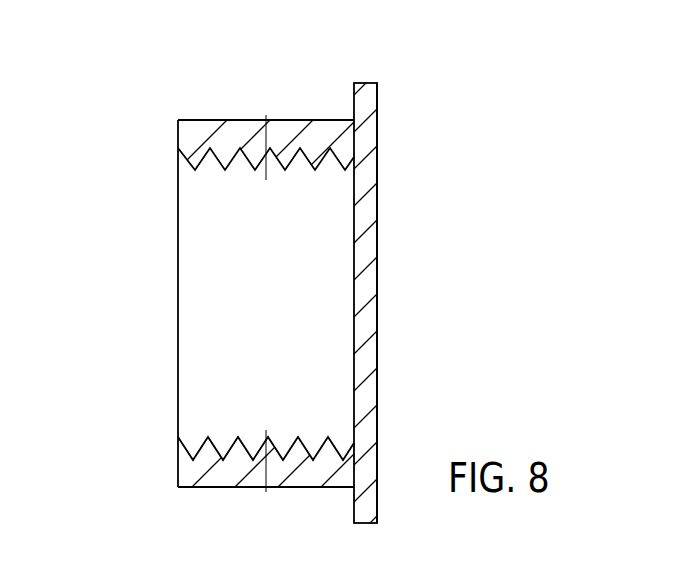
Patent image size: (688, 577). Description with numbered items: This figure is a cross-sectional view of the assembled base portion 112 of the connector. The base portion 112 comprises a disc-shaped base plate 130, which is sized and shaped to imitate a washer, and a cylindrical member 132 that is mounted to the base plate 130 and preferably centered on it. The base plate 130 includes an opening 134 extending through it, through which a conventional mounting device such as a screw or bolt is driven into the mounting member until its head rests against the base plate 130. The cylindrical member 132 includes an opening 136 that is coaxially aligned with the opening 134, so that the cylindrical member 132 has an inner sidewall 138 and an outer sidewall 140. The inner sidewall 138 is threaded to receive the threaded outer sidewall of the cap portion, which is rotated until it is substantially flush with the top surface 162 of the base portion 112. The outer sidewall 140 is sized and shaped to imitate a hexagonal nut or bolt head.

The base portion 112 is at (432, 372).
The base plate 130 is at (377, 146).
The cylindrical member 132 is at (211, 210).
The opening 134 is at (377, 303).
The opening 136 is at (305, 283).
The inner sidewall 138 is at (298, 168).
The outer sidewall 140 is at (292, 120).
The top surface 162 is at (178, 461).